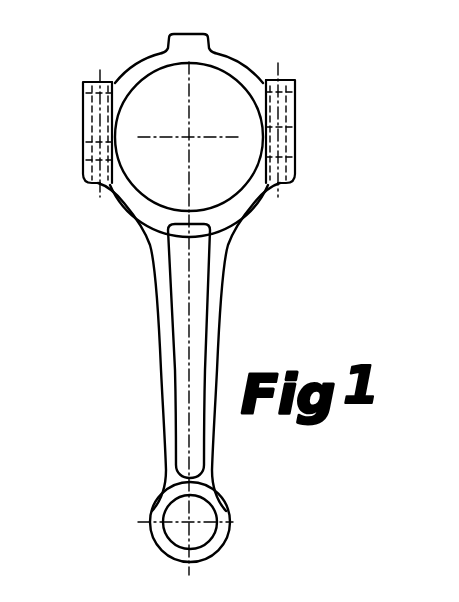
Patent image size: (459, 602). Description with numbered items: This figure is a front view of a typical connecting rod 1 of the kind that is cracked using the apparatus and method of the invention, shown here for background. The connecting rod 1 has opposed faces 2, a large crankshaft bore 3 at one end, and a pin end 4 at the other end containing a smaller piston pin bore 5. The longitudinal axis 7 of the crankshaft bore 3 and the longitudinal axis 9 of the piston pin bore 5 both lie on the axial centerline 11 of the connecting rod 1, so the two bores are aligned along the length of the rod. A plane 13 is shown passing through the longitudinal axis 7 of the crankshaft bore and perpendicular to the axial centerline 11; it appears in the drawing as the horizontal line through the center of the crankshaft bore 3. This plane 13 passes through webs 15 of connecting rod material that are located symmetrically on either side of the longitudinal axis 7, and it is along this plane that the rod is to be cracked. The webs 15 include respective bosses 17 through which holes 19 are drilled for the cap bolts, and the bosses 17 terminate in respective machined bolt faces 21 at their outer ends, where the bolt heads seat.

The connecting rod 1 is at (188, 302).
The opposed faces 2 is at (222, 237).
The crankshaft bore 3 is at (189, 135).
The pin end 4 is at (186, 395).
The piston pin bore 5 is at (172, 508).
The longitudinal axis of the crankshaft bore 7 is at (192, 136).
The longitudinal axis of the piston pin bore 9 is at (192, 526).
The axial centerline 11 is at (190, 302).
The plane 13 is at (186, 137).
The webs 15 is at (188, 113).
The bosses 17 is at (85, 93).
The holes 19 is at (83, 121).
The machined bolt faces 21 is at (90, 78).